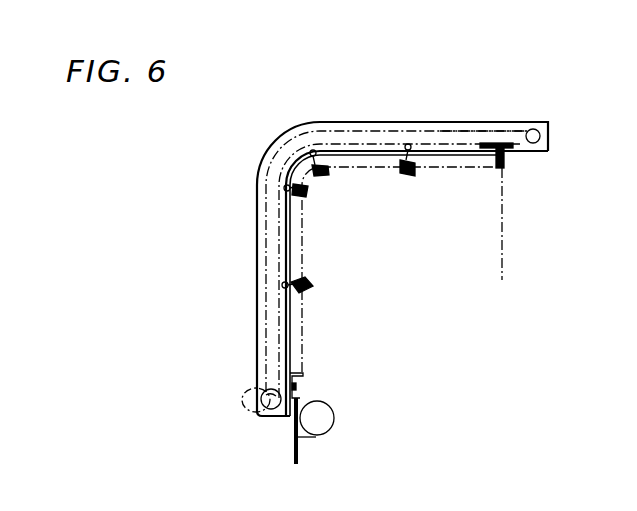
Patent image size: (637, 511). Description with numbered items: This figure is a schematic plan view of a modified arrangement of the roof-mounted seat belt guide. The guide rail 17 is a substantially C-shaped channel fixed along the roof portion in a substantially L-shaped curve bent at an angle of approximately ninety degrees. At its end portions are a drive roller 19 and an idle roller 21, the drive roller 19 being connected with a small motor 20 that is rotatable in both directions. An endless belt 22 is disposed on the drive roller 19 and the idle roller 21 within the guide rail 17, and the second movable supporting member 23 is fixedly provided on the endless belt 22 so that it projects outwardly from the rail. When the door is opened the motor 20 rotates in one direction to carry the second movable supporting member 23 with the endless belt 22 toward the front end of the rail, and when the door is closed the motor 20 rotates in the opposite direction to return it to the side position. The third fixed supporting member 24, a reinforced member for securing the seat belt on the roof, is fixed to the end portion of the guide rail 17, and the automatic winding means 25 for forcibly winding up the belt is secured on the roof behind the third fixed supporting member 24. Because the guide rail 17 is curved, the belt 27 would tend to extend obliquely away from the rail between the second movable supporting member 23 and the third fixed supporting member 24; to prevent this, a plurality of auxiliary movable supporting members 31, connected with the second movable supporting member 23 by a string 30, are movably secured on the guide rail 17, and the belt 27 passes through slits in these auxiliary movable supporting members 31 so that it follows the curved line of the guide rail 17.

The guide rail 17 is at (352, 122).
The drive roller 19 is at (268, 395).
The small motor 20 is at (248, 413).
The idle roller 21 is at (538, 130).
The endless belt 22 is at (460, 126).
The second movable supporting member 23 is at (507, 165).
The third fixed supporting member 24 is at (303, 374).
The automatic winding means 25 is at (326, 431).
The belt 27 is at (473, 170).
The string 30 is at (372, 157).
The auxiliary movable supporting members 31 is at (307, 191).